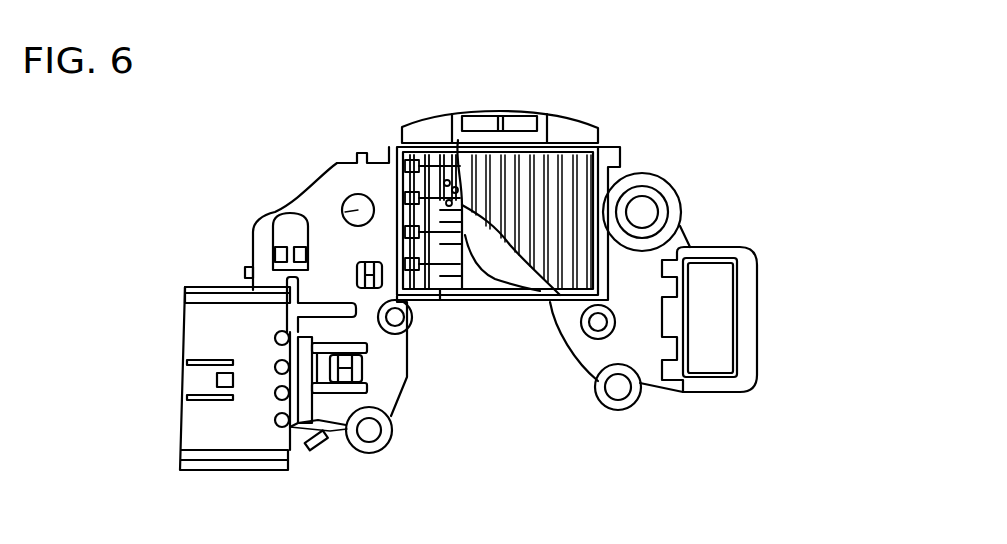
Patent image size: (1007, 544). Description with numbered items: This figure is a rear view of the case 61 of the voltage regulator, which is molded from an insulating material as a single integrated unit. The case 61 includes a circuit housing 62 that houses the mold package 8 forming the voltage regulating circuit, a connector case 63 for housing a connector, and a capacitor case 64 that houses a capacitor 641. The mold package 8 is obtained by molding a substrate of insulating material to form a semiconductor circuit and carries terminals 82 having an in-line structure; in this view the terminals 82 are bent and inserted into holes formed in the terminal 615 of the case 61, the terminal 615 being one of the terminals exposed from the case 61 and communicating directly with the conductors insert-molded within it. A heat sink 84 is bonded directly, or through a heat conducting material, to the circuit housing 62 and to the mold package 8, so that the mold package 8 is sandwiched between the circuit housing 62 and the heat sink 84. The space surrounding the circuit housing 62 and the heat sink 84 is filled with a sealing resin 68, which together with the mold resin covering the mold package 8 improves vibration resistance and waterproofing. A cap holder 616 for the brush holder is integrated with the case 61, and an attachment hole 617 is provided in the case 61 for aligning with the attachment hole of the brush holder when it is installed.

The mold package 8 is at (497, 303).
The terminals 82 is at (420, 302).
The heat sink 84 is at (563, 165).
The case 61 is at (650, 172).
The attachment hole 617 is at (646, 210).
The circuit housing 62 is at (257, 222).
The connector 63 is at (220, 313).
The capacitor case 64 is at (727, 247).
The capacitor 641 is at (720, 326).
The sealing resin 68 is at (346, 199).
The terminal 615 is at (447, 303).
The cap holder 616 is at (458, 140).